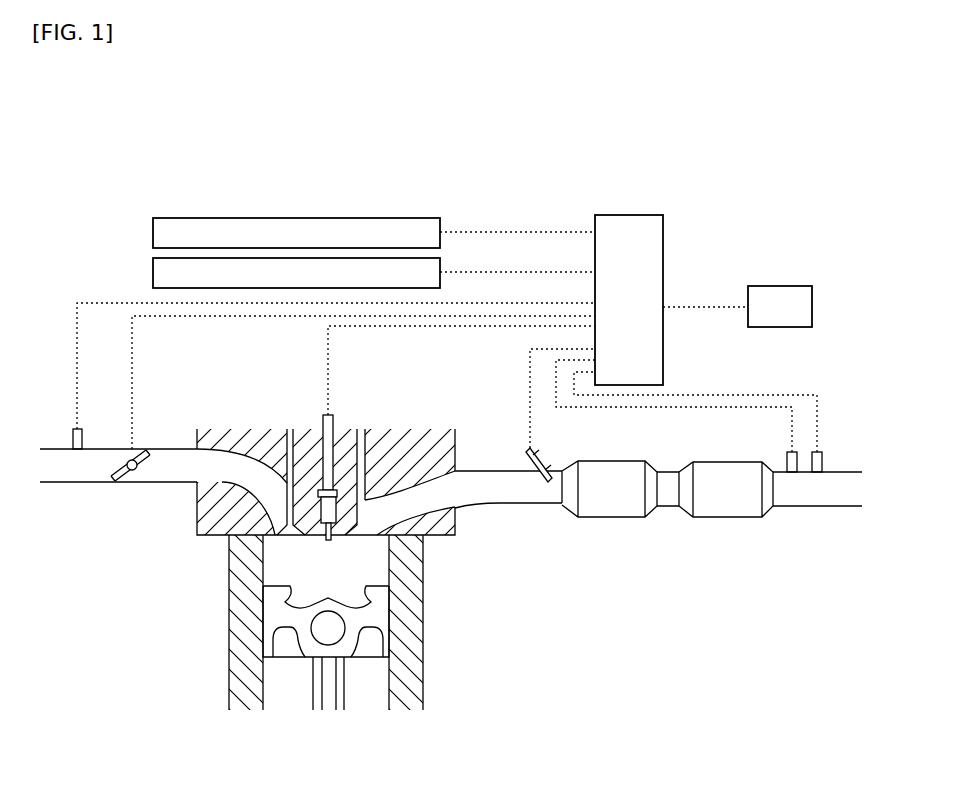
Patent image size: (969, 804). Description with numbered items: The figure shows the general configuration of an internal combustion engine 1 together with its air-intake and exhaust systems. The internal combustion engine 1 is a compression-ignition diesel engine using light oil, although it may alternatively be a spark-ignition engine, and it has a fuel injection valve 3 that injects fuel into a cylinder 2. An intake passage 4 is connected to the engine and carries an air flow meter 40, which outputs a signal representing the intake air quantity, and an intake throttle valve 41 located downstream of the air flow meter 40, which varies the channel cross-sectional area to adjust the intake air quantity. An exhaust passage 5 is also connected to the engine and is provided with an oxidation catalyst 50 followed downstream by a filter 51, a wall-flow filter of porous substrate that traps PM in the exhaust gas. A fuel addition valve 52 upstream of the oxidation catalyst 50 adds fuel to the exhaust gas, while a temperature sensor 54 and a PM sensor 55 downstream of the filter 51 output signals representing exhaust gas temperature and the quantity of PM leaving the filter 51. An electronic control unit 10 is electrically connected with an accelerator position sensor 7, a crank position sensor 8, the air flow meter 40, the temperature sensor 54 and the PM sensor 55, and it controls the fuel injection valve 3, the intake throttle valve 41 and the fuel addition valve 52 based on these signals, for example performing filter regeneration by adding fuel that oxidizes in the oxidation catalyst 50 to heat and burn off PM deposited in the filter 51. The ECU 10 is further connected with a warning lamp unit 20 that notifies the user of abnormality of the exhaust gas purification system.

The internal combustion engine 1 is at (210, 588).
The cylinder 2 is at (372, 557).
The fuel injection valve 3 is at (323, 420).
The intake passage 4 is at (92, 483).
The exhaust passage 5 is at (505, 508).
The accelerator position sensor 7 is at (153, 233).
The crank position sensor 8 is at (153, 272).
The electronic control unit (ECU) 10 is at (663, 238).
The warning lamp unit 20 is at (795, 286).
The air flow meter 40 is at (72, 430).
The intake throttle valve 41 is at (150, 455).
The oxidation catalyst 50 is at (592, 518).
The filter 51 is at (727, 518).
The fuel addition valve 52 is at (545, 456).
The temperature sensor 54 is at (790, 452).
The PM sensor 55 is at (820, 452).